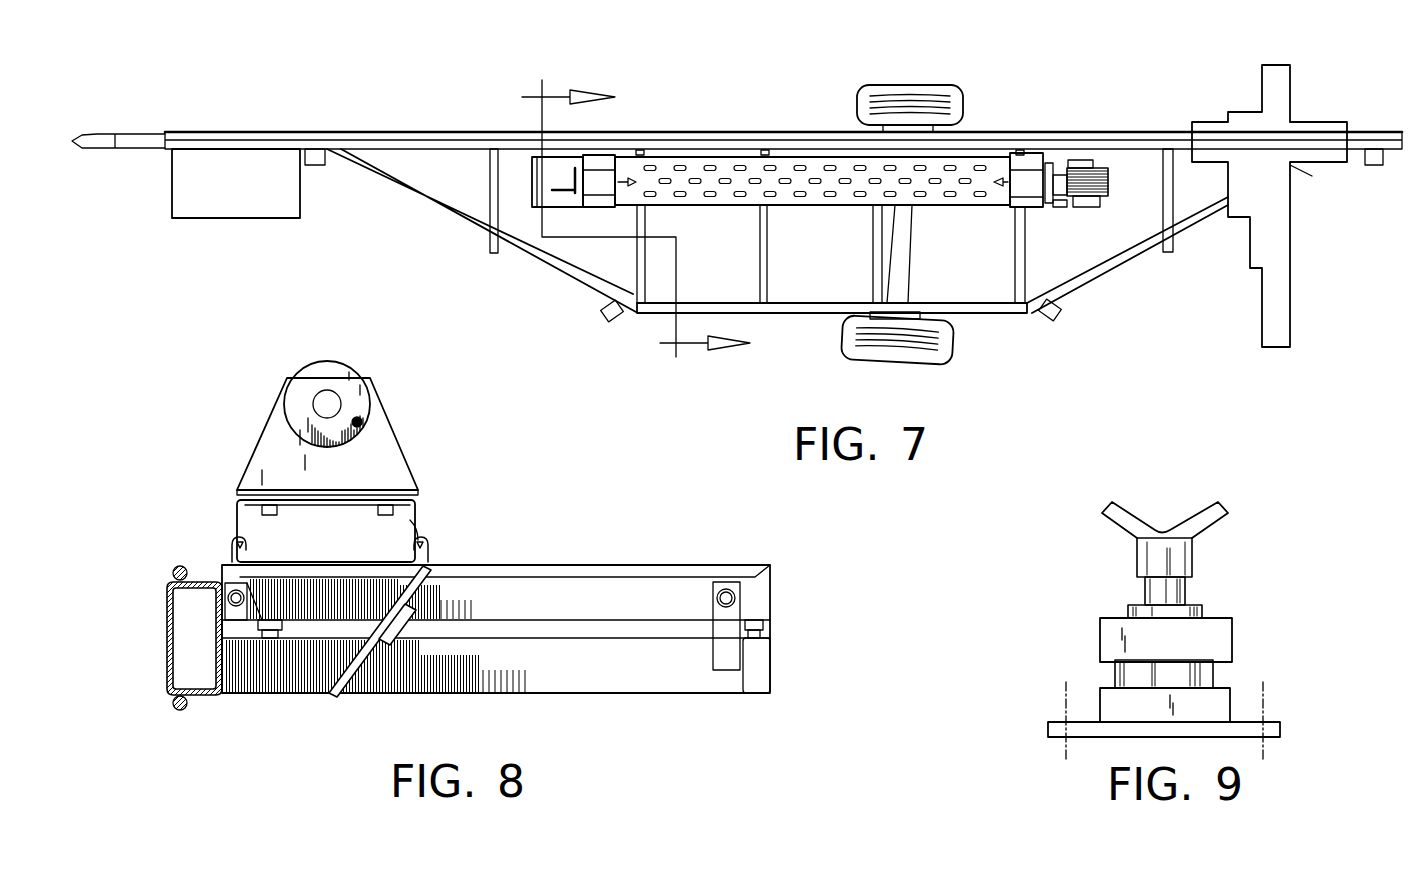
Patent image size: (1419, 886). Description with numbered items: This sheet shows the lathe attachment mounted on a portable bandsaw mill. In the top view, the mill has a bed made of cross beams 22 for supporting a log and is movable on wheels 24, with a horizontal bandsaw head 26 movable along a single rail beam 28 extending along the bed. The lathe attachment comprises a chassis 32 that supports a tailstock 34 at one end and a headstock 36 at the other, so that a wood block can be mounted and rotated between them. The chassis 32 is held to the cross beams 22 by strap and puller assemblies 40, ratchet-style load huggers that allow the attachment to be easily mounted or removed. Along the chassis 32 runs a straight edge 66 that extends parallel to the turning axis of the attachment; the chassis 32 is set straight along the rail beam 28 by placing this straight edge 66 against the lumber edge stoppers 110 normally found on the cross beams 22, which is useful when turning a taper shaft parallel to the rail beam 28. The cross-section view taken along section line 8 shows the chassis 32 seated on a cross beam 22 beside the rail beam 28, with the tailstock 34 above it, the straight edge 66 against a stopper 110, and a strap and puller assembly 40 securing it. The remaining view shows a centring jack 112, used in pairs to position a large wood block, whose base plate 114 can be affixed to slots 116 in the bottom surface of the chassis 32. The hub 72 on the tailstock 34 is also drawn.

In FIG. 7, the section line 8— 8 is at (640, 220).
In FIG. 7, the cross beams 22 is at (633, 272).
In FIG. 8, the cross beams 22 is at (632, 563).
In FIG. 7, the wheels 24 is at (933, 88).
In FIG. 7, the bandsaw head 26 is at (1260, 313).
In FIG. 7, the rail beam 28 is at (427, 132).
In FIG. 8, the rail beam 28 is at (167, 630).
In FIG. 7, the chassis 32 is at (837, 210).
In FIG. 8, the chassis 32 is at (417, 523).
In FIG. 7, the tailstock 34 is at (603, 207).
In FIG. 8, the tailstock 34 is at (393, 435).
In FIG. 7, the headstock 36 is at (1030, 165).
In FIG. 8, the strap and puller assemblies 40 is at (410, 610).
In FIG. 7, the straight edge 66 is at (817, 155).
In FIG. 8, the straight edge 66 is at (233, 515).
In FIG. 8, the auger hub 72 is at (347, 365).
In FIG. 7, the lumber edge stoppers 110 is at (640, 150).
In FIG. 8, the lumber edge stoppers 110 is at (228, 562).
In FIG. 9, the centring jack 112 is at (1287, 565).
In FIG. 9, the base plate 114 is at (1275, 722).
In FIG. 7, the slots 116 is at (797, 165).